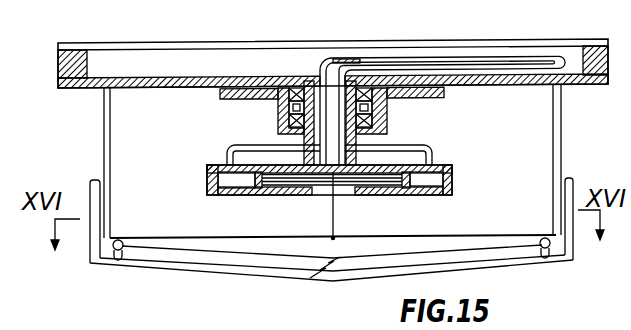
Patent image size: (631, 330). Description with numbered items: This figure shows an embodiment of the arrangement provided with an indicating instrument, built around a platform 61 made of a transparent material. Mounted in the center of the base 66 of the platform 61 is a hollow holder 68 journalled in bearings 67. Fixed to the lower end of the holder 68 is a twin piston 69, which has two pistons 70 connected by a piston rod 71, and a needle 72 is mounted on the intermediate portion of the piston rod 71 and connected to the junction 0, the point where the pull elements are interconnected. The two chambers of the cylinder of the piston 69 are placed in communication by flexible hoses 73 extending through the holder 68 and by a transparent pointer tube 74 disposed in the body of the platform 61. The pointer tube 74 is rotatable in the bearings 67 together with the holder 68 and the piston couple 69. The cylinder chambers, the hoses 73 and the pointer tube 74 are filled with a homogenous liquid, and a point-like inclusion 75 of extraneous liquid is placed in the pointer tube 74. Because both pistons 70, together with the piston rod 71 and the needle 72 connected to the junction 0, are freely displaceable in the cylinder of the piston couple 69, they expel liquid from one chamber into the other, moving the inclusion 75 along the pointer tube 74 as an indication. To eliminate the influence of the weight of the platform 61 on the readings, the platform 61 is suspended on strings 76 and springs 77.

The platform 61 is at (80, 48).
The base 66 is at (105, 96).
The bearings 67 is at (387, 117).
The hollow holder 68 is at (390, 151).
The twin piston 69 is at (452, 173).
The pistons 70 is at (404, 189).
The piston rod 71 is at (259, 190).
The needle 72 is at (332, 209).
The flexible hoses 73 is at (227, 151).
The transparent pointer tube 74 is at (520, 69).
The point-like inclusion 75 is at (322, 61).
The strings 76 is at (190, 240).
The springs 77 is at (310, 278).
The junction 0 is at (341, 206).